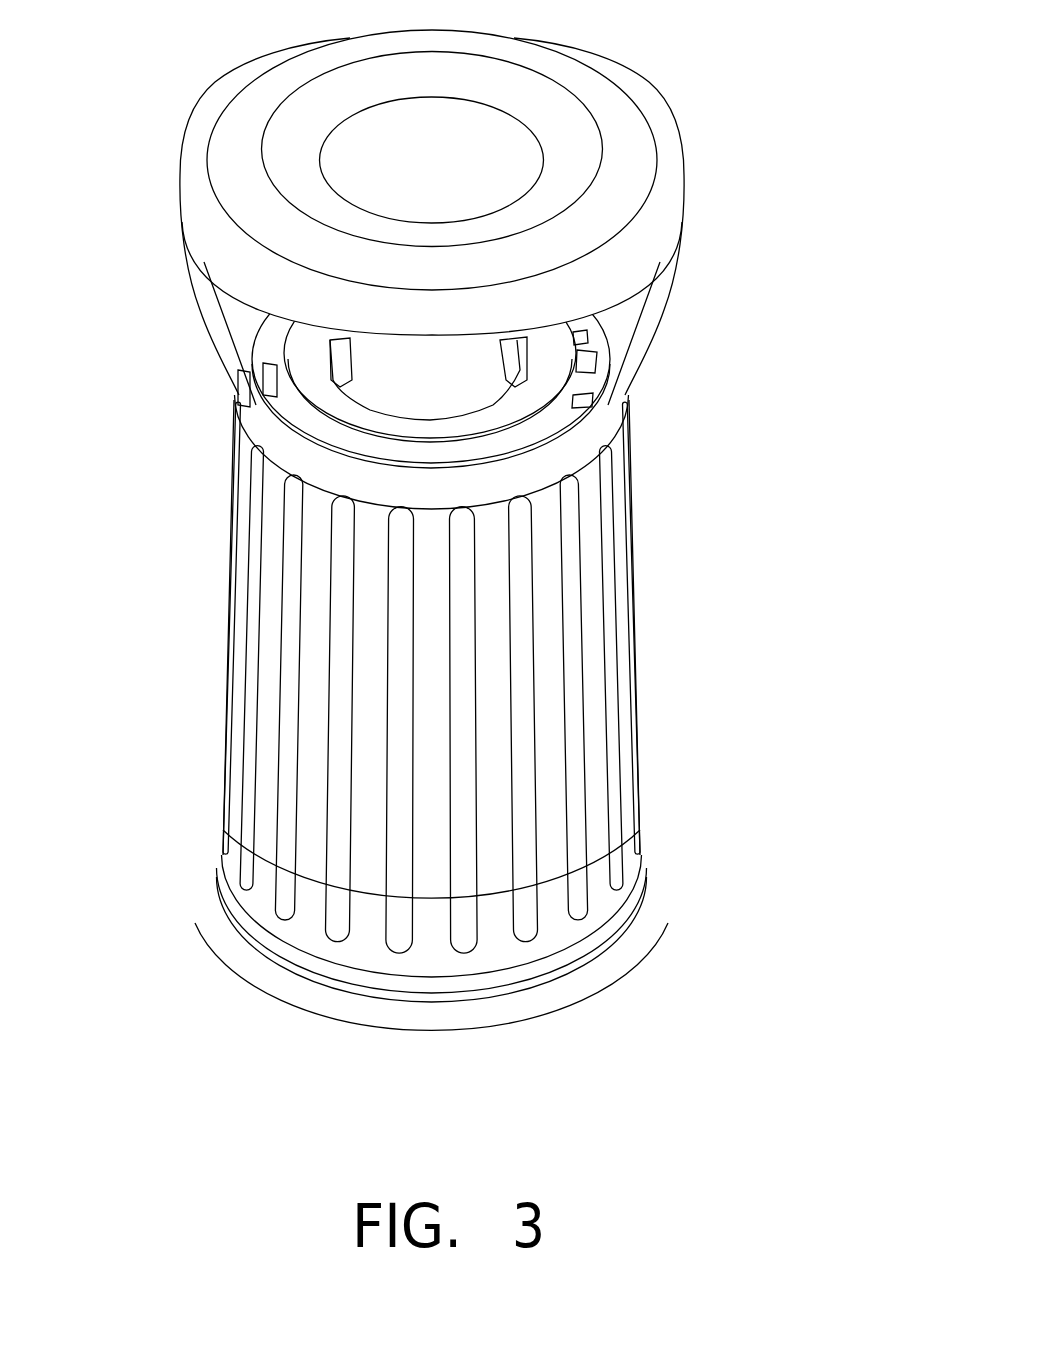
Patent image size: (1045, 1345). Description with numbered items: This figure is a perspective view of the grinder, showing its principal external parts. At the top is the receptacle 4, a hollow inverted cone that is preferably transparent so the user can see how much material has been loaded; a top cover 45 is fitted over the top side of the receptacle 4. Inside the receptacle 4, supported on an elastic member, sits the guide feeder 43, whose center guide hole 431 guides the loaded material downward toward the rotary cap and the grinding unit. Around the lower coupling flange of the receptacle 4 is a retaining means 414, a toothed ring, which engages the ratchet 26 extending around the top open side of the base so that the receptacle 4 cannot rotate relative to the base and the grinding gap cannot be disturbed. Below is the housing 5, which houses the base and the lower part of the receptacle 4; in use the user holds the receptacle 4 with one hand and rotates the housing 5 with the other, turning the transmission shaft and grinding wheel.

The receptacle 4 is at (676, 284).
The top cover 45 is at (587, 86).
The ratchet 26 is at (591, 321).
The retaining means 414 is at (598, 356).
The guide feeder 43 is at (520, 403).
The center guide hole 431 is at (390, 380).
The housing 5 is at (630, 622).